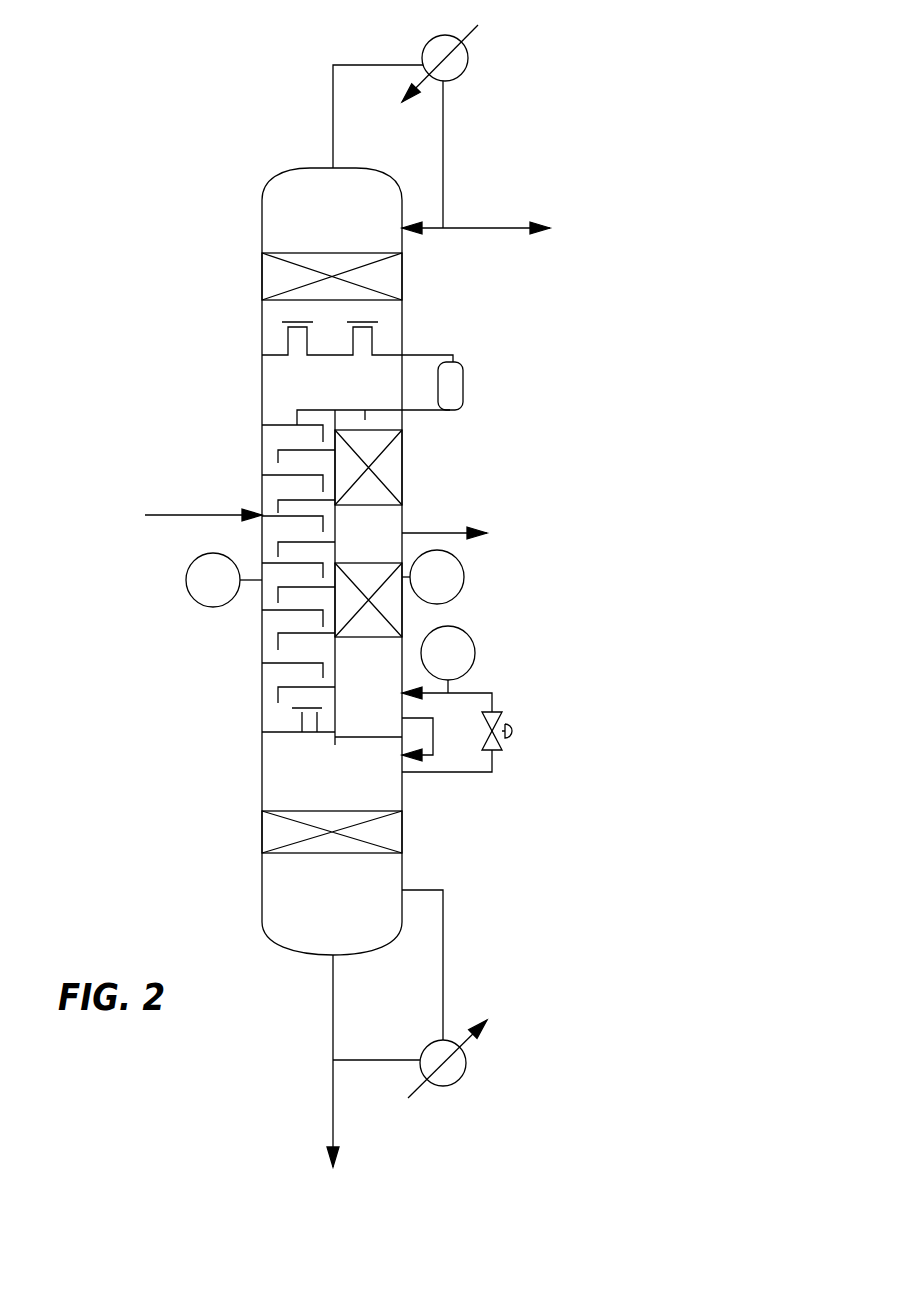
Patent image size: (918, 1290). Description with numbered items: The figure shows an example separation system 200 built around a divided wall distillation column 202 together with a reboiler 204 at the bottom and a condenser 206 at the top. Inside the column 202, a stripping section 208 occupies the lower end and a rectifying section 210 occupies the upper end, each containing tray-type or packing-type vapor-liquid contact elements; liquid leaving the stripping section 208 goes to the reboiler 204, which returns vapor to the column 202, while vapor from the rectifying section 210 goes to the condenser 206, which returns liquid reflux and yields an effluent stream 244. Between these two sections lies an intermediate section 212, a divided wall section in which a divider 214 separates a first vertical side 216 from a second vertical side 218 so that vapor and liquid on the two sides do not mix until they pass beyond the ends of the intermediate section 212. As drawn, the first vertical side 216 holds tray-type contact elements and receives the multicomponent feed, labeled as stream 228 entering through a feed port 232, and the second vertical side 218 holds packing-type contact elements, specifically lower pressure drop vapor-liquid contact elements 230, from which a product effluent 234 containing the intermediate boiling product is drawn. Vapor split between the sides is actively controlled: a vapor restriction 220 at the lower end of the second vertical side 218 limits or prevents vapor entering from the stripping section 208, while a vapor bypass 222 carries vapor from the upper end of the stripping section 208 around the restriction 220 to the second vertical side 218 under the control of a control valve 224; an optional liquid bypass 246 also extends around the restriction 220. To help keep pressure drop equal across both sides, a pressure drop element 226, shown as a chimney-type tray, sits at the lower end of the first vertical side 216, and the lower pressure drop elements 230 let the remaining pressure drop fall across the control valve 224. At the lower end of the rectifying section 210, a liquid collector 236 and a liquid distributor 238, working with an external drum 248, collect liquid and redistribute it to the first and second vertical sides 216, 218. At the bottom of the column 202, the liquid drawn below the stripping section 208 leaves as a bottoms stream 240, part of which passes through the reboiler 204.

The separation system 200 is at (278, 127).
The column 202 is at (262, 403).
The reboiler 204 is at (457, 1078).
The condenser 206 is at (437, 36).
The stripping section 208 is at (247, 753).
The rectifying section 210 is at (250, 202).
The intermediate section 212 is at (200, 408).
The divider 214 is at (285, 702).
The first vertical side 216 is at (270, 675).
The second vertical side 218 is at (373, 675).
The vapor restriction 220 is at (358, 740).
The vapor bypass 222 is at (492, 772).
The control valve 224 is at (513, 732).
The pressure drop element 226 is at (280, 732).
The feed stream 228 is at (270, 523).
The lower pressure drop vapor-liquid contact elements 230 is at (355, 478).
The multicomponent feed port 232 is at (192, 513).
The product effluent 234 is at (402, 533).
The liquid collector 236 is at (373, 333).
The liquid distributor 238 is at (383, 413).
The bottoms stream 240 is at (331, 1108).
The effluent stream 244 is at (488, 228).
The liquid bypass 246 is at (433, 737).
The external drum 248 is at (463, 383).